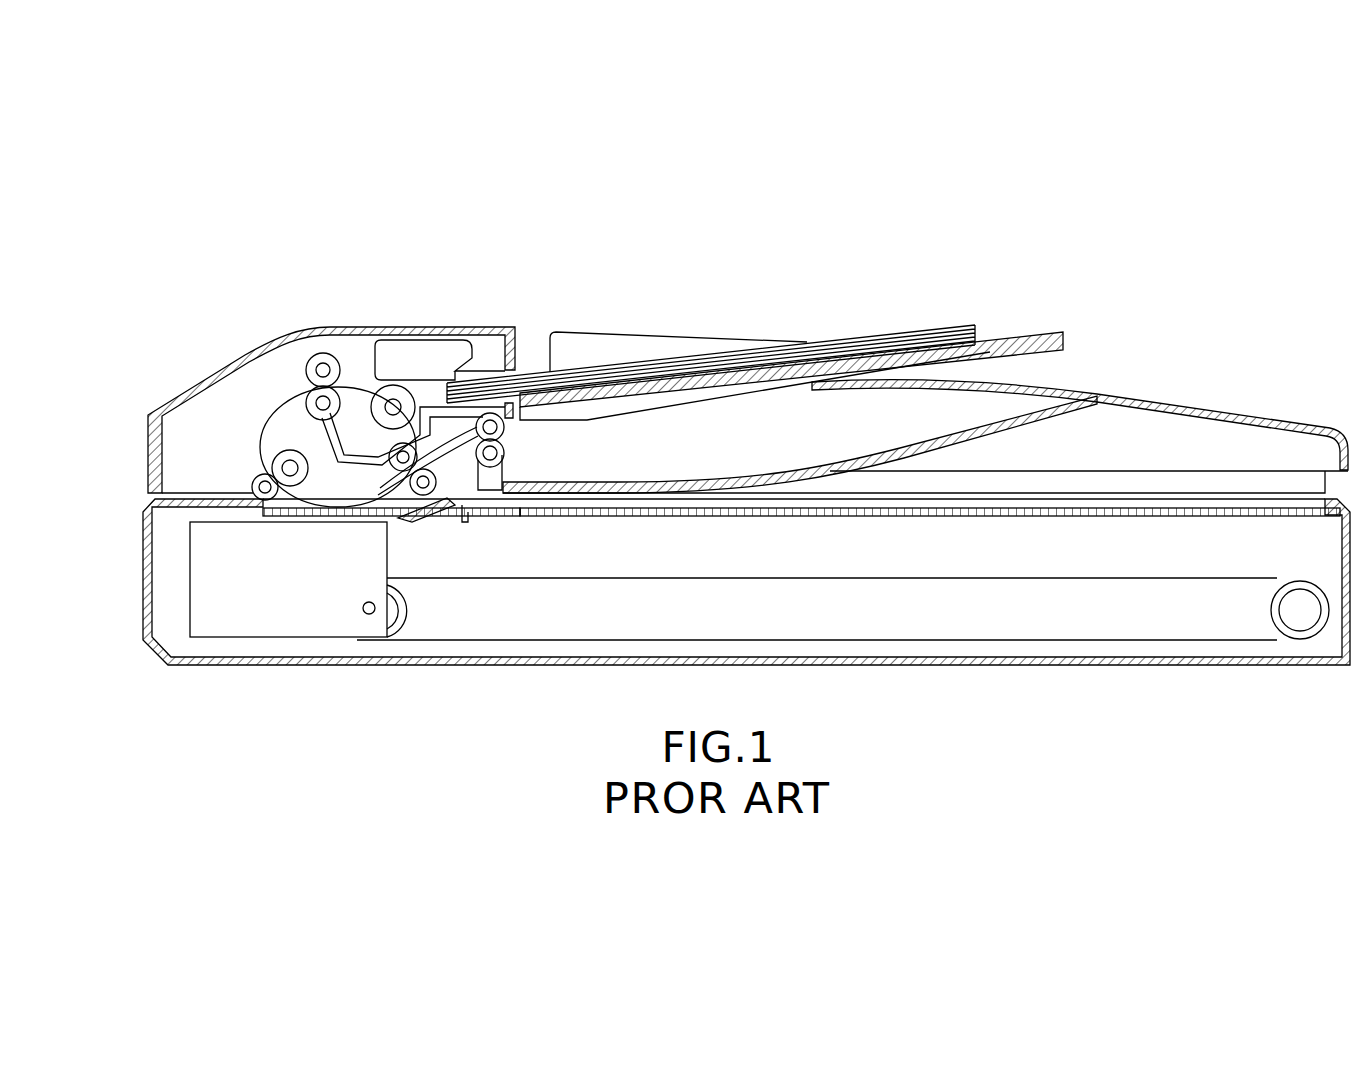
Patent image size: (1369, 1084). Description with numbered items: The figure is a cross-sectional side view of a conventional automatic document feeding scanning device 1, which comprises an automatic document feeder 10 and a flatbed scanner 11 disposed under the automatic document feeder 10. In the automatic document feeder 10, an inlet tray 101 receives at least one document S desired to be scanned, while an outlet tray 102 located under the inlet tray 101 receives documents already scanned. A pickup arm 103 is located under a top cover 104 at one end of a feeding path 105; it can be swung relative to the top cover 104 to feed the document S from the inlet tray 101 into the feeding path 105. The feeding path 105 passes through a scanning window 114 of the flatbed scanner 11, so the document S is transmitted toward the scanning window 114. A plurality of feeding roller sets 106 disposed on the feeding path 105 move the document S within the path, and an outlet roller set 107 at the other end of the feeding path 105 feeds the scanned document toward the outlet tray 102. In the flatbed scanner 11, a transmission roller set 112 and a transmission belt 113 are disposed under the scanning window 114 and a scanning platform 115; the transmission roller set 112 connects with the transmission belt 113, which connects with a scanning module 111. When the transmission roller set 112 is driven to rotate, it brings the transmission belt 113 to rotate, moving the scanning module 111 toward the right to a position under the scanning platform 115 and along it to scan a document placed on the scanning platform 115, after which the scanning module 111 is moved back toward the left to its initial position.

The automatic document feeding scanning device 1 is at (1102, 258).
The automatic document feeder 10 is at (1202, 364).
The flatbed scanner 11 is at (133, 597).
The inlet tray 101 is at (813, 368).
The outlet tray 102 is at (800, 463).
The pickup arm 103 is at (425, 350).
The top cover 104 is at (400, 327).
The feeding path 105 is at (277, 405).
The feeding roller sets 106 is at (321, 362).
The outlet roller set 107 is at (503, 428).
The scanning module 111 is at (268, 612).
The transmission roller set 112 is at (1298, 597).
The transmission belt 113 is at (1118, 642).
The scanning window 114 is at (295, 513).
The scanning platform 115 is at (1160, 508).
The document S is at (900, 332).